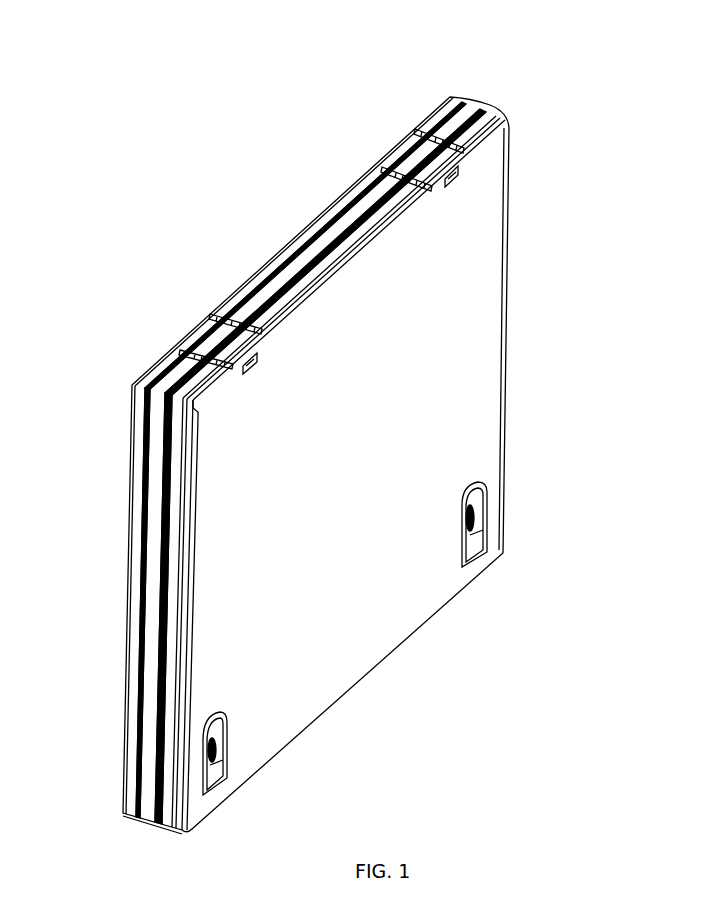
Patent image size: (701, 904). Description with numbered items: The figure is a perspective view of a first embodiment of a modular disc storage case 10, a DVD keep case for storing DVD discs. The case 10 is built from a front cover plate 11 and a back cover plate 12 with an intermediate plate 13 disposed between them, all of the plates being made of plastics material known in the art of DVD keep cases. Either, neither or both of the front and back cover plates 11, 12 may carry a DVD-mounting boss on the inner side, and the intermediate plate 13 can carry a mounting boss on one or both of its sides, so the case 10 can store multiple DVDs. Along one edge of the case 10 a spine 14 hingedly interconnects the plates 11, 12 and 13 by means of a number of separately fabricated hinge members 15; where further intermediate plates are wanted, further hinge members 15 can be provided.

The modular disc storage case 10 is at (158, 213).
The front cover plate 11 is at (477, 265).
The back cover plate 12 is at (128, 418).
The intermediate plate 13 is at (152, 732).
The spine 14 is at (502, 90).
The hinge members 15 is at (434, 167).